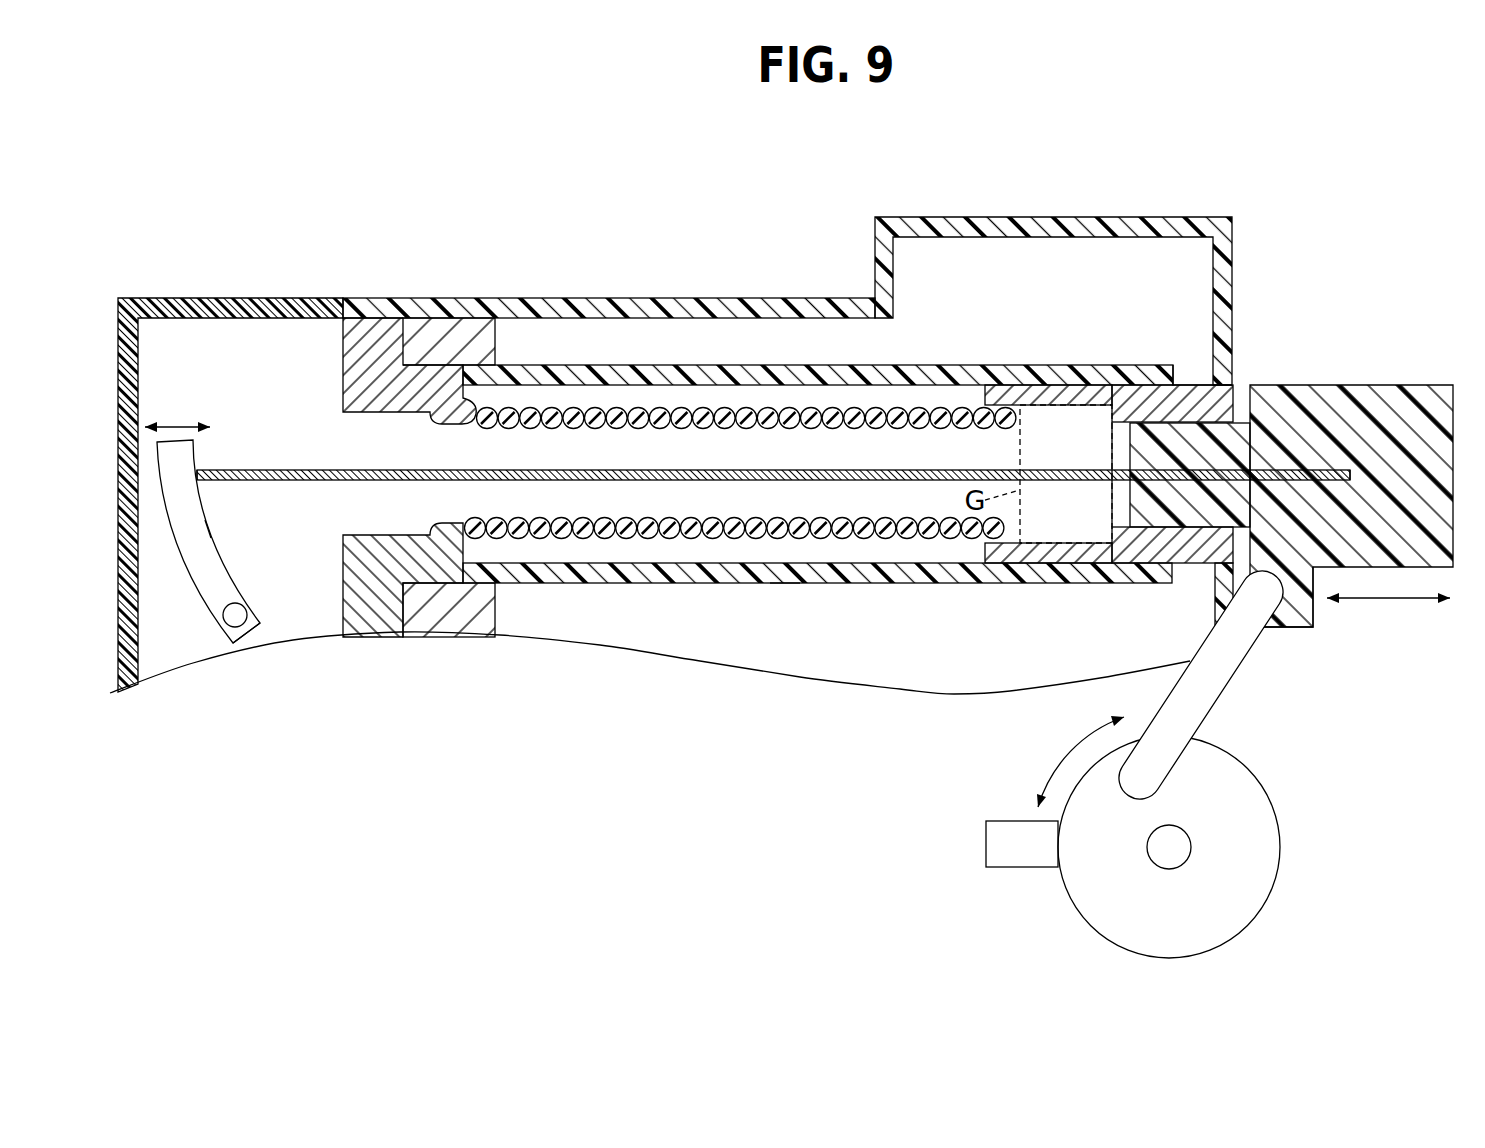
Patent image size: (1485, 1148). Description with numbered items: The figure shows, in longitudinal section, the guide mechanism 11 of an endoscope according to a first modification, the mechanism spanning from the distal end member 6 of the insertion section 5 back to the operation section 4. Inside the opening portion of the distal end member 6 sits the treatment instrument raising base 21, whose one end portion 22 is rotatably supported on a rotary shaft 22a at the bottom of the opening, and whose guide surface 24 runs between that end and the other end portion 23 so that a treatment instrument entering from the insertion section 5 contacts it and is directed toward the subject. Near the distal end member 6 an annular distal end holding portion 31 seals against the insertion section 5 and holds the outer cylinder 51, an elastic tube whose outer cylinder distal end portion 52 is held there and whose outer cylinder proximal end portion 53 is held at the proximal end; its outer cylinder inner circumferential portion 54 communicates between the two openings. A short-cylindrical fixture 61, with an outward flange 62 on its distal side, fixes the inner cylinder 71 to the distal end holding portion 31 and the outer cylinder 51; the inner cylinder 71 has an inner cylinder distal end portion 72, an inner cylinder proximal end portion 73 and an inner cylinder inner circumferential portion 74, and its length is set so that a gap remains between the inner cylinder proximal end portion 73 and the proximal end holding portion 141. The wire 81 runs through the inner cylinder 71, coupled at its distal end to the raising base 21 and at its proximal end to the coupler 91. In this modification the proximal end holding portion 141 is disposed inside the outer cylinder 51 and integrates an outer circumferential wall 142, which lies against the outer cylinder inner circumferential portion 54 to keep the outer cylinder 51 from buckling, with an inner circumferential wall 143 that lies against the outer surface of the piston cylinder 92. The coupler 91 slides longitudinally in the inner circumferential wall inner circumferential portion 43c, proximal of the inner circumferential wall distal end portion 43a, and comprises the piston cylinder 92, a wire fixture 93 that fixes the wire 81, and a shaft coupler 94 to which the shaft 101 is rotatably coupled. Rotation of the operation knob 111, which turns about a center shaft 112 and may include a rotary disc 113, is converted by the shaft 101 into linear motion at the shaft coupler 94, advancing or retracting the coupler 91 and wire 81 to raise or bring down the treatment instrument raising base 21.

The operation section 4 is at (1052, 217).
The insertion section 5 is at (688, 298).
The distal end member 6 is at (283, 298).
The guide mechanism 11 is at (295, 641).
The treatment instrument raising base 21 is at (178, 547).
The one end portion 22 is at (247, 610).
The rotary shaft 22a is at (224, 619).
The other end portion 23 is at (197, 466).
The guide surface 24 is at (210, 525).
The distal end holding portion 31 is at (447, 623).
The inner circumferential wall distal end portion 43a is at (1108, 410).
The inner circumferential wall inner circumferential portion 43c is at (1112, 440).
The outer cylinder 51 is at (688, 585).
The outer cylinder distal end portion 52 is at (465, 565).
The outer cylinder proximal end portion 53 is at (1182, 567).
The outer cylinder inner circumferential portion 54 is at (786, 573).
The fixture 61 is at (343, 380).
The outward flange 62 is at (343, 340).
The inner cylinder 71 is at (640, 429).
The inner cylinder distal end portion 72 is at (473, 423).
The inner cylinder proximal end portion 73 is at (1016, 430).
The inner cylinder inner circumferential portion 74 is at (770, 429).
The wire 81 is at (433, 480).
The coupler 91 is at (1408, 385).
The piston cylinder 92 is at (1258, 445).
The wire fixture 93 is at (1342, 468).
The shaft coupler 94 is at (1313, 607).
The shaft 101 is at (1229, 672).
The operation knob 111 is at (986, 839).
The center shaft 112 is at (1169, 845).
The rotary disc 113 is at (1273, 889).
The proximal end holding portion 141 is at (1193, 383).
The outer circumferential wall 142 is at (1053, 393).
The inner circumferential wall 143 is at (1150, 413).